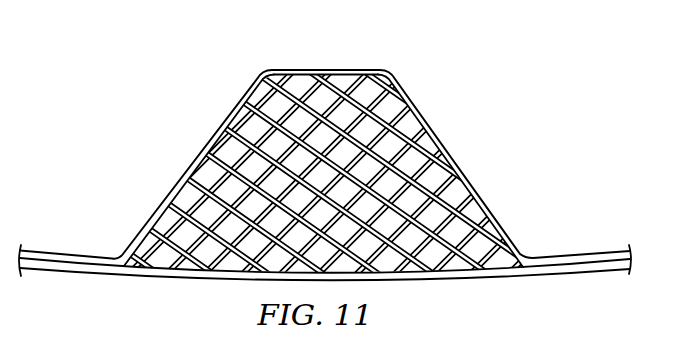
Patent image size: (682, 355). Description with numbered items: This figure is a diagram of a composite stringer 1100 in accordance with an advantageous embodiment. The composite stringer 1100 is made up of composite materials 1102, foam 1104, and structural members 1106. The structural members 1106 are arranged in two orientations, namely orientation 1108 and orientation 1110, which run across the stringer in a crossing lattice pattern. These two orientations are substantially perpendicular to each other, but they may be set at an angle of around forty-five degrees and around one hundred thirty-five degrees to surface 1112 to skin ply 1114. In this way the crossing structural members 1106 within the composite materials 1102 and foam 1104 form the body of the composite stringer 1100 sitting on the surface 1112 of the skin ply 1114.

The composite stringer 1100 is at (362, 69).
The composite materials 1102 is at (317, 69).
The foam 1104 is at (433, 170).
The structural members 1106 is at (243, 102).
The orientation 1108 is at (170, 242).
The orientation 1110 is at (180, 203).
The surface 1112 is at (185, 280).
The skin ply 1114 is at (465, 280).